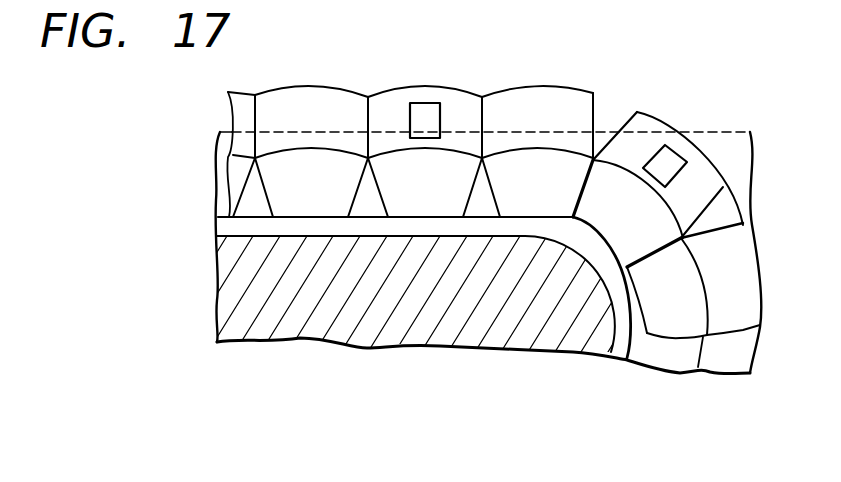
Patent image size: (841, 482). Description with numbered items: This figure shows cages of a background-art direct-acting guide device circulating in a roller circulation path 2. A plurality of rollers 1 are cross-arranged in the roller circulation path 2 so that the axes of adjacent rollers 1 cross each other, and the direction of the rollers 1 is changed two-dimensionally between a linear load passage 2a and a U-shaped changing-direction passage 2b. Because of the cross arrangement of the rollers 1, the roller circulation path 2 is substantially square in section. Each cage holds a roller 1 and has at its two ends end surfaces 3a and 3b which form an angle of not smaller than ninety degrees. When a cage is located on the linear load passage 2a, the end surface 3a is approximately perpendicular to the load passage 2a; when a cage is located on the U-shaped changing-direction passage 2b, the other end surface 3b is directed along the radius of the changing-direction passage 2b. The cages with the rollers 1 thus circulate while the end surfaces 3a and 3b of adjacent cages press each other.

The roller 1 is at (427, 108).
The roller circulation path 2 is at (607, 110).
The linear load passage 2a is at (365, 188).
The U-shaped changing-direction passage 2b is at (667, 353).
The end surface 3a is at (617, 122).
The end surface 3b is at (576, 197).